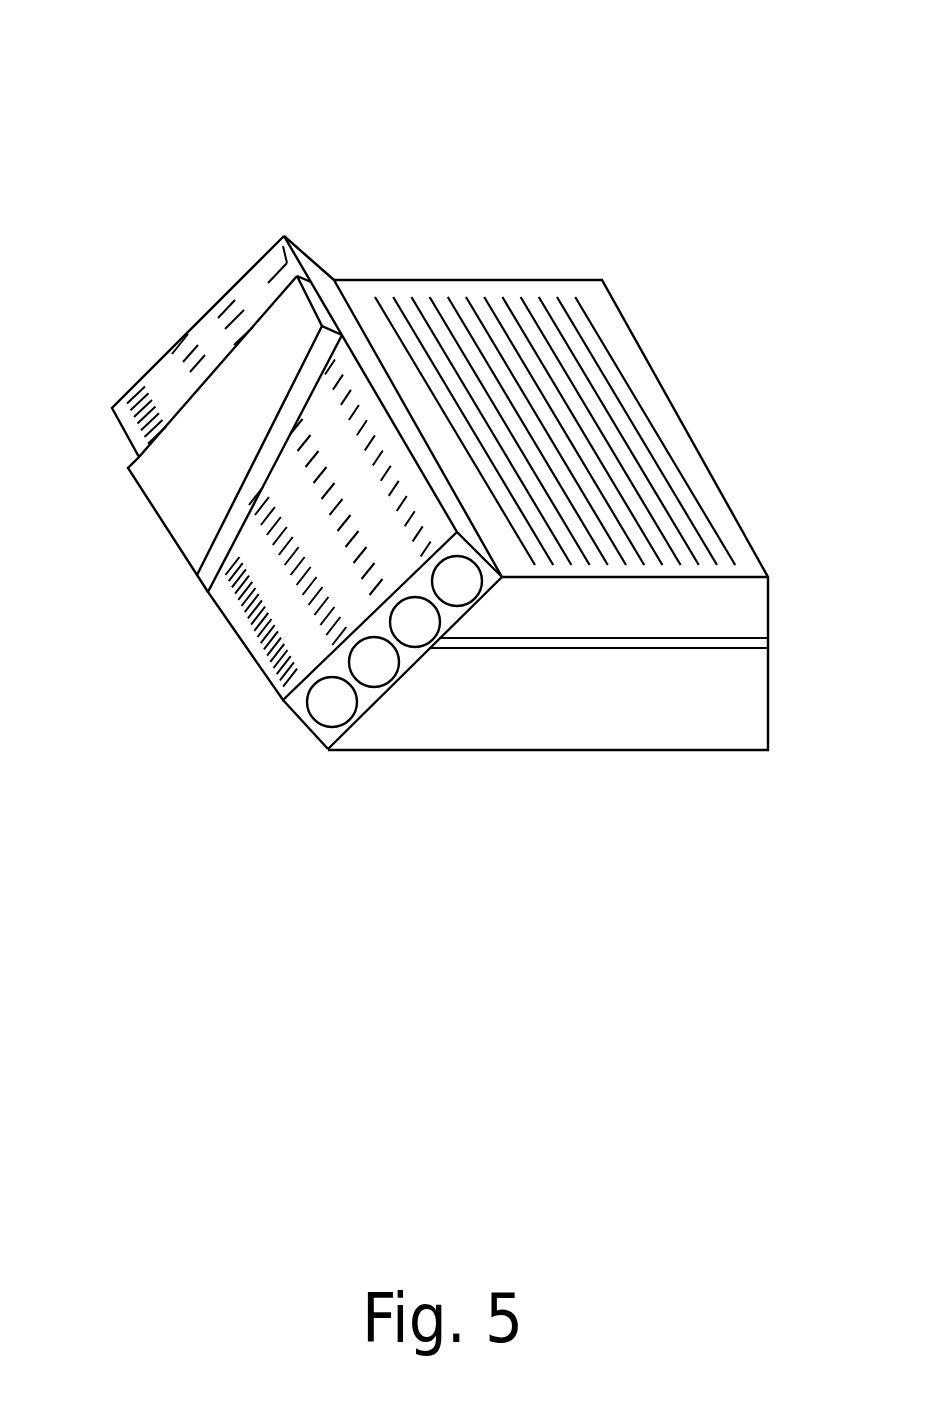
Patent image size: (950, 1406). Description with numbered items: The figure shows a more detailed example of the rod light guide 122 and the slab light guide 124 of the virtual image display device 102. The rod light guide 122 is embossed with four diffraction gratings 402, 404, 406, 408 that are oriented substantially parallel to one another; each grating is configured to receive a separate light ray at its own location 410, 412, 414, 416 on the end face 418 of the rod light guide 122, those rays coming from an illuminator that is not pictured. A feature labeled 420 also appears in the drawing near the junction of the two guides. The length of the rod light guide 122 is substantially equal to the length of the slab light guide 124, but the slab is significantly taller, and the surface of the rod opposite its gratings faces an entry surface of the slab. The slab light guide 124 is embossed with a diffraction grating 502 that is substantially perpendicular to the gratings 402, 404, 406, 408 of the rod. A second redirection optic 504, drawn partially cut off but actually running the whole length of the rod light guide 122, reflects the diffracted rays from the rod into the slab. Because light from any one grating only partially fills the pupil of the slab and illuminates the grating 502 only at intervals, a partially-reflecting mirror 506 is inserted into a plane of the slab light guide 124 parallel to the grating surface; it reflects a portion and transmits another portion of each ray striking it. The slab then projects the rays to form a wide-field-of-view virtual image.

The virtual image display device 102 is at (107, 70).
The rod light guide 122 is at (213, 651).
The slab light guide 124 is at (687, 377).
The diffraction grating 402 is at (278, 239).
The diffraction grating 404 is at (235, 300).
The diffraction grating 406 is at (188, 334).
The diffraction grating 408 is at (145, 383).
The light ray entry point 410 is at (457, 581).
The light ray entry point 412 is at (415, 622).
The light ray entry point 414 is at (374, 662).
The light ray entry point 416 is at (332, 702).
The end face 418 is at (302, 743).
The hinge fold 420 is at (310, 241).
The diffraction grating 502 is at (539, 298).
The second redirection optic 504 is at (178, 552).
The partially-reflecting mirror 506 is at (620, 648).